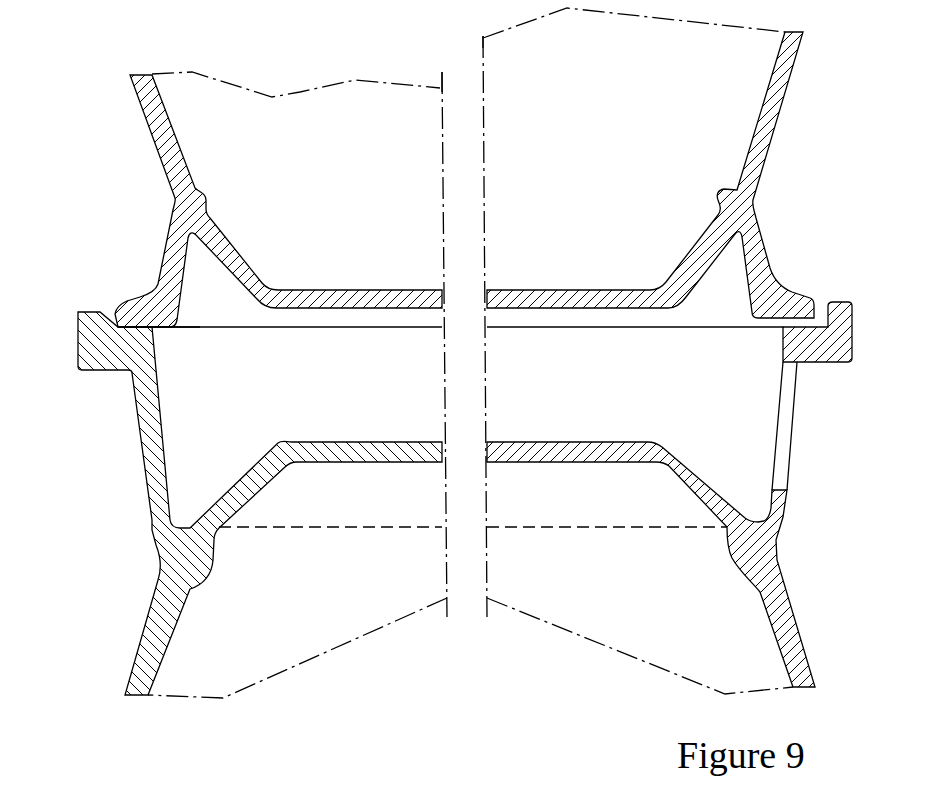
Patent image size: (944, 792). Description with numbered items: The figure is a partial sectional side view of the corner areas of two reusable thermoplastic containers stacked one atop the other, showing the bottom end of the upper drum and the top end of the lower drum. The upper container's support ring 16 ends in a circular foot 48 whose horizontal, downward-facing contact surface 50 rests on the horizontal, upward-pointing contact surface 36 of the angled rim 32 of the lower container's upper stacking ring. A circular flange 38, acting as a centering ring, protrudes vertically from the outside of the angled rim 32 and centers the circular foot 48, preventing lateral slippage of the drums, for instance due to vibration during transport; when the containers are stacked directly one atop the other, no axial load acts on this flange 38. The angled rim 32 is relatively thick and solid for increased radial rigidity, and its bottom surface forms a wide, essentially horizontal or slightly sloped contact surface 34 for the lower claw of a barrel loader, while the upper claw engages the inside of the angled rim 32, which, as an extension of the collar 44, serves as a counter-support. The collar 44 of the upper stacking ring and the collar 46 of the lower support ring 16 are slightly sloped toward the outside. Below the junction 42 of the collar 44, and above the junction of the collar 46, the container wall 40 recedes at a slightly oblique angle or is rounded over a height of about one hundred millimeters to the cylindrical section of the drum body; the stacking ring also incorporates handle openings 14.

The handle openings 14 is at (778, 470).
The support ring 16 is at (131, 262).
The angled rim 32 is at (850, 350).
The contact surface 34 is at (798, 363).
The contact surface 36 is at (827, 313).
The circular flange 38 is at (842, 307).
The container wall 40 is at (134, 85).
The junction 42 is at (167, 553).
The collar 44 is at (157, 470).
The collar 46 is at (177, 258).
The circular foot 48 is at (138, 312).
The contact surface 50 is at (150, 332).